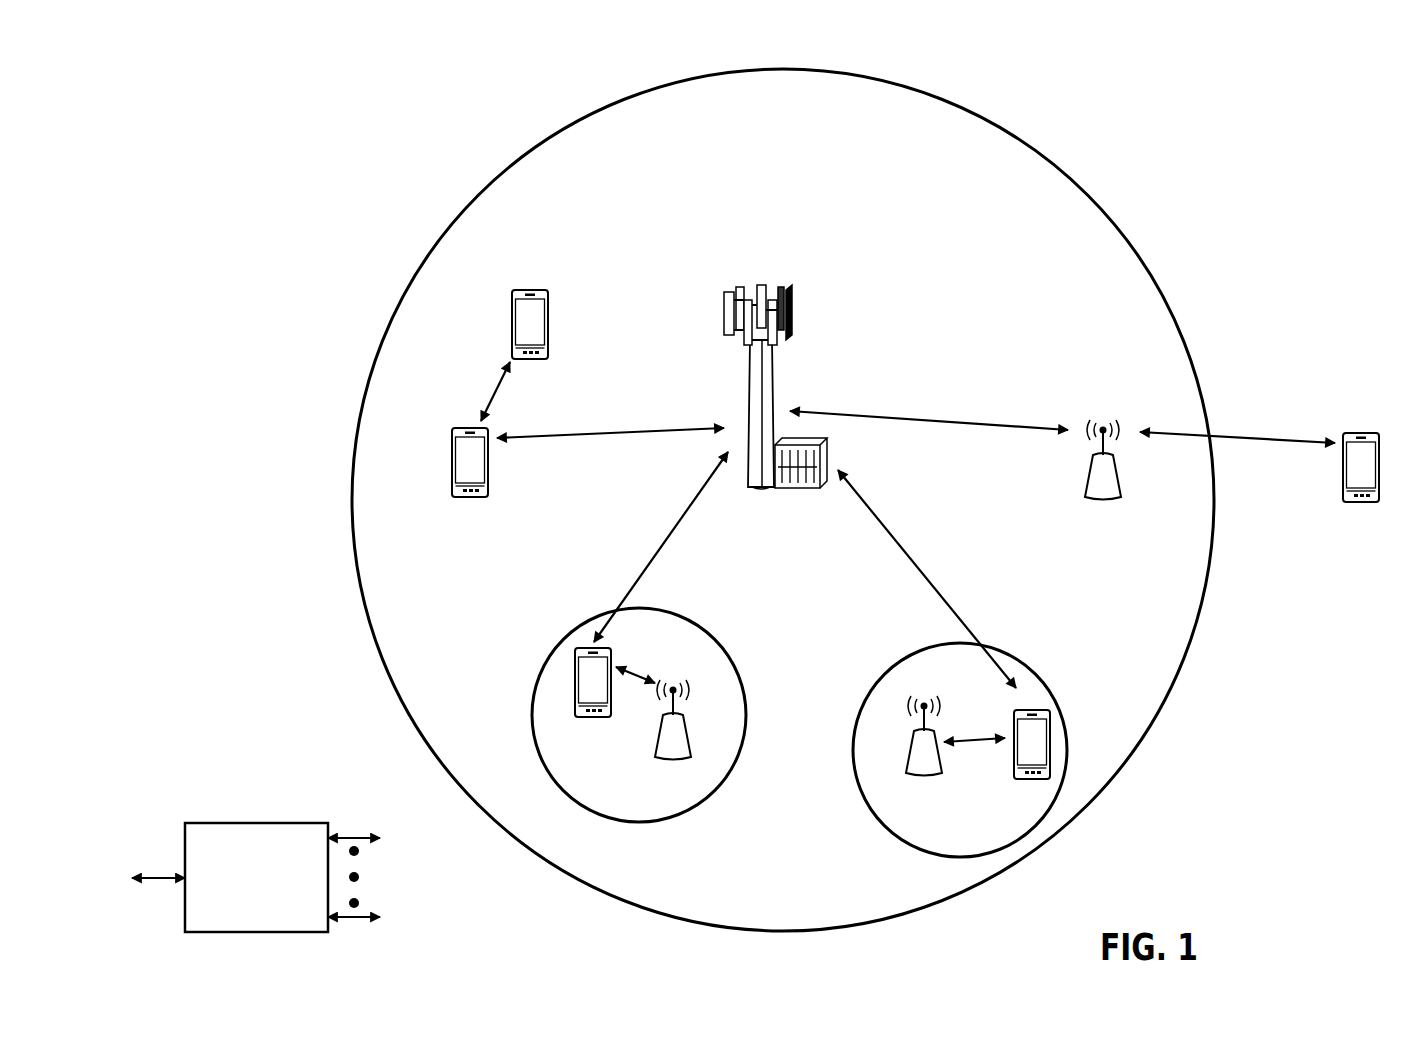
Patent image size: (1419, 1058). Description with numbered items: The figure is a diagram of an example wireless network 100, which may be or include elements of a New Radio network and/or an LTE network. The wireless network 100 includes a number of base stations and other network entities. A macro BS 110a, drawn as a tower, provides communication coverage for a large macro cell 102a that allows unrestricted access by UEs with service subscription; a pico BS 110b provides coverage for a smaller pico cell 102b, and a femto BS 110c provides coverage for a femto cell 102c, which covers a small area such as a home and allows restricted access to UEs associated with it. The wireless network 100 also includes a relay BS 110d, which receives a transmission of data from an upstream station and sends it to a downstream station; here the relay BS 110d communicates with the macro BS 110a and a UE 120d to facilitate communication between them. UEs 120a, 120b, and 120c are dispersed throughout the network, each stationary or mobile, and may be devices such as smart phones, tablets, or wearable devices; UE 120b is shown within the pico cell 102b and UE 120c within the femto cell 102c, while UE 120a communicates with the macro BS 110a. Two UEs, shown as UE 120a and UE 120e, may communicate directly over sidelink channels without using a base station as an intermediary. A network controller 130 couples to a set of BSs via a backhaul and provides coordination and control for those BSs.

The wireless network 100 is at (240, 67).
The macro cell 102a is at (1068, 176).
The pico cell 102b is at (729, 655).
The femto cell 102c is at (899, 661).
The macro BS 110a is at (771, 280).
The pico BS 110b is at (692, 746).
The femto BS 110c is at (908, 760).
The relay BS 110d is at (1105, 420).
The UE 120a is at (452, 462).
The UE 120b is at (586, 717).
The UE 120c is at (1022, 779).
The UE 120d is at (1379, 433).
The UE 120e is at (512, 312).
The network controller 130 is at (255, 823).